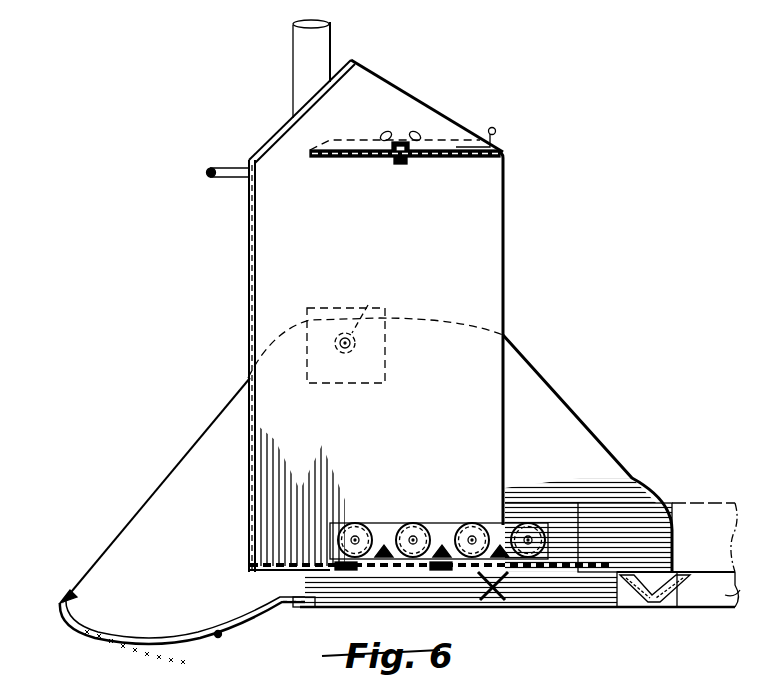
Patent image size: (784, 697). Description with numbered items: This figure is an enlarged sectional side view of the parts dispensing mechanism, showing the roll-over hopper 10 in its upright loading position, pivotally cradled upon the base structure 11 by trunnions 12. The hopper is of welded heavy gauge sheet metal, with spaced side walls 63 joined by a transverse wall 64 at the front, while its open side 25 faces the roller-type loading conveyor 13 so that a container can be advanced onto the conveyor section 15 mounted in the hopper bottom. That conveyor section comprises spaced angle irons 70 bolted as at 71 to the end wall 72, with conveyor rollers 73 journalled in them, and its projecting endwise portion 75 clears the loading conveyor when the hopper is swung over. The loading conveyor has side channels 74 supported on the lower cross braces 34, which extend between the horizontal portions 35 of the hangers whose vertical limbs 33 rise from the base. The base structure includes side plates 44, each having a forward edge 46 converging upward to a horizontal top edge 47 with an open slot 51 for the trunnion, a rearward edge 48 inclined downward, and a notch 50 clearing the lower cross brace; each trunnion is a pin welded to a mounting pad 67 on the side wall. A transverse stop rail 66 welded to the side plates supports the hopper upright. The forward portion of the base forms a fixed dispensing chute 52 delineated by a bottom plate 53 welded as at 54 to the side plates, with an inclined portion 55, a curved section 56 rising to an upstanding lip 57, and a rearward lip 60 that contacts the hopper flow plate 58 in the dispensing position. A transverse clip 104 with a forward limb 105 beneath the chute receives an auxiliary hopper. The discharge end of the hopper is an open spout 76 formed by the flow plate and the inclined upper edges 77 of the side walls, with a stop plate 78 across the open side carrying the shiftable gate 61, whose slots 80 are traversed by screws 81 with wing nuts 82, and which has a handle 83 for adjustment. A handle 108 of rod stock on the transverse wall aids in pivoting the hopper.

The roll-over hopper 10 is at (510, 188).
The base structure 11 is at (158, 480).
The trunnions 12 is at (367, 305).
The loading conveyor 13 is at (700, 495).
The conveyor section 15 is at (510, 518).
The open side 25 is at (505, 252).
The vertical limbs 33 is at (325, 37).
The cross braces 34 is at (672, 607).
The horizontal portions 35 is at (722, 598).
The side plates 44 is at (575, 445).
The forward edge 46 is at (203, 433).
The top edge 47 is at (447, 317).
The rearward edge 48 is at (548, 384).
The notch 50 is at (630, 607).
The open slot 51 is at (380, 340).
The fixed dispensing chute 52 is at (82, 634).
The bottom plate 53 is at (112, 642).
The welds 54 is at (128, 636).
The inclined portion 55 is at (236, 628).
The curved section 56 is at (140, 648).
The upstanding lip 57 is at (62, 600).
The flow plate 58 is at (305, 107).
The upstanding lip 60 is at (293, 598).
The shiftable gate 61 is at (448, 138).
The side walls 63 is at (280, 248).
The transverse wall 64 is at (249, 303).
The stop rail 66 is at (492, 588).
The mounting pad 67 is at (388, 360).
The angle irons 70 is at (383, 524).
The bolts 71 is at (350, 570).
The end wall 72 is at (430, 570).
The conveyor rollers 73 is at (420, 522).
The side channels 74 is at (730, 503).
The projecting endwise portion 75 is at (550, 560).
The open spout 76 is at (404, 88).
The inclined upper edges 77 is at (432, 108).
The stop plate 78 is at (455, 158).
The slots 80 is at (466, 140).
The screws 81 is at (400, 164).
The wing nut 82 is at (392, 135).
The handle 83 is at (497, 132).
The transverse clip 104 is at (238, 630).
The forward limb 105 is at (218, 638).
The handle 108 is at (220, 168).